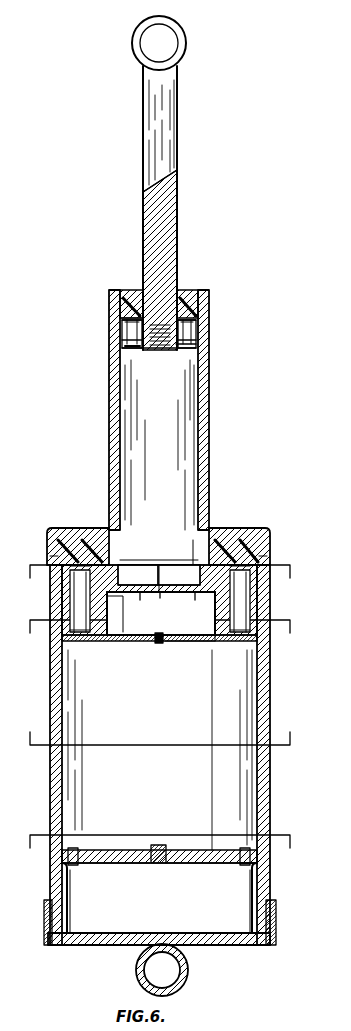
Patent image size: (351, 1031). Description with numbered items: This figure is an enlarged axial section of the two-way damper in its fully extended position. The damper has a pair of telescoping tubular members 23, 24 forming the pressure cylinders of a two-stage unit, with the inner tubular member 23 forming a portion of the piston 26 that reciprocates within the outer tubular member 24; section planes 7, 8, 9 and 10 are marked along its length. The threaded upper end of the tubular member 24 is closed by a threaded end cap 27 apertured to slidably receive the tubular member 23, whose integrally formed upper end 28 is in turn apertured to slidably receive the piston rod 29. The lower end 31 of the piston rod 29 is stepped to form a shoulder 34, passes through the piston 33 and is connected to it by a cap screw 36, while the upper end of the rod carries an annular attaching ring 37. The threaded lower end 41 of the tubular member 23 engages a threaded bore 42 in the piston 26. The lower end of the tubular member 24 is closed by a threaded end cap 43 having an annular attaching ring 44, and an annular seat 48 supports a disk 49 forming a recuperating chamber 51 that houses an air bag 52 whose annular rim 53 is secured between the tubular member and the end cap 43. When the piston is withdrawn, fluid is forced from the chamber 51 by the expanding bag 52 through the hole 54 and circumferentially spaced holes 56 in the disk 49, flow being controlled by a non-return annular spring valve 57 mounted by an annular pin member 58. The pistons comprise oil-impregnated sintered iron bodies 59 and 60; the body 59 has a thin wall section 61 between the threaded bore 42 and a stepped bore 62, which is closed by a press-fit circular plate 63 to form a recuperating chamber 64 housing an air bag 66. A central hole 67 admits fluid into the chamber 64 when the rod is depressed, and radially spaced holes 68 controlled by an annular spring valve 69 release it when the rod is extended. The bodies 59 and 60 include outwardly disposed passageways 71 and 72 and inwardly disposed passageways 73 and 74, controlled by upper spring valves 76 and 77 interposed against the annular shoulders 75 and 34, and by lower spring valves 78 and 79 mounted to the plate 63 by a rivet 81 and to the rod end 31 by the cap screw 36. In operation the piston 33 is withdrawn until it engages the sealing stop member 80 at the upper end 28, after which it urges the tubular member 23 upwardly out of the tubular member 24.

The swivel bracket 7 is at (160, 582).
The section line 8 is at (160, 640).
The section line 9 is at (160, 729).
The section line 10 is at (161, 857).
The tubular member 23 is at (209, 410).
The tubular member 24 is at (270, 770).
The piston 26 is at (214, 620).
The end cap 27 is at (245, 535).
The upper end 28 is at (200, 293).
The piston rod 29 is at (178, 148).
The lower end 31 is at (146, 352).
The piston 33 is at (196, 341).
The shoulder 34 is at (176, 292).
The cap screw 36 is at (160, 352).
The attaching ring 37 is at (186, 33).
The threaded lower end 41 is at (130, 568).
The threaded bore 42 is at (190, 580).
The end cap 43 is at (88, 945).
The attaching ring 44 is at (184, 980).
The annular seat 48 is at (245, 864).
The disk 49 is at (108, 864).
The recuperating chamber 51 is at (262, 888).
The air bag 52 is at (68, 912).
The annular rim 53 is at (50, 945).
The hole 54 is at (162, 866).
The holes 56 is at (73, 848).
The spring valve 57 is at (118, 850).
The pin member 58 is at (160, 845).
The body 59 is at (258, 606).
The body 60 is at (196, 330).
The thin wall section 61 is at (171, 601).
The stepped bore 62 is at (195, 600).
The circular plate 63 is at (118, 641).
The recuperating chamber 64 is at (118, 612).
The air bag 66 is at (143, 592).
The central hole 67 is at (159, 578).
The holes 68 is at (95, 620).
The spring valve 69 is at (138, 575).
The passageways 71 is at (74, 636).
The passageways 72 is at (185, 350).
The passageways 73 is at (86, 636).
The passageways 74 is at (135, 350).
The annular shoulder 75 is at (192, 560).
The upper spring valve 76 is at (50, 558).
The upper spring valve 77 is at (196, 322).
The lower spring valve 78 is at (180, 641).
The lower spring valve 79 is at (126, 347).
The sealing stop member 80 is at (121, 316).
The rivet 81 is at (159, 643).